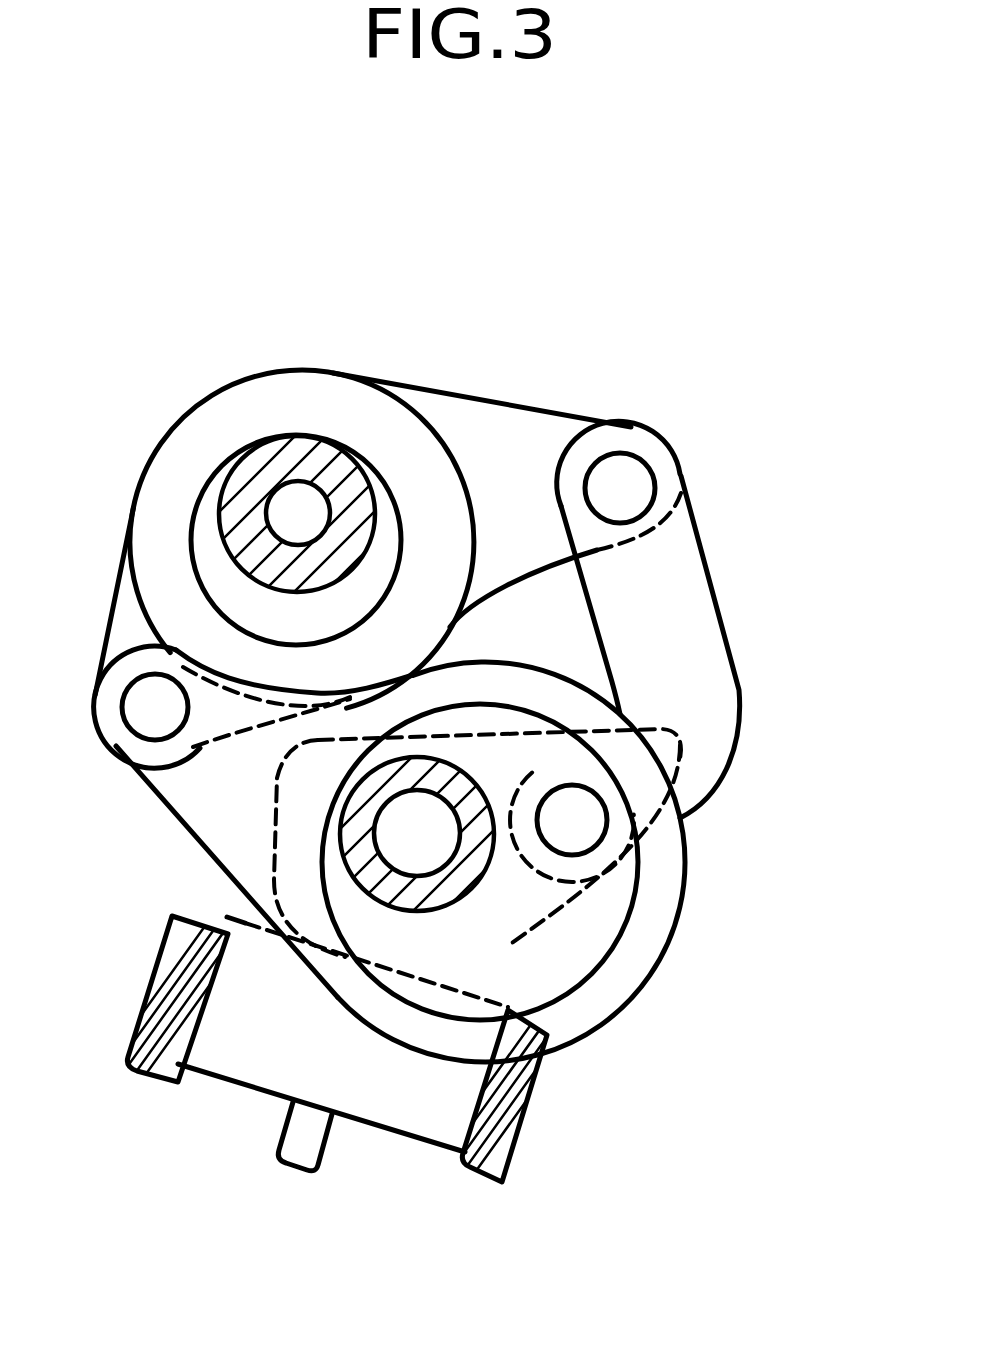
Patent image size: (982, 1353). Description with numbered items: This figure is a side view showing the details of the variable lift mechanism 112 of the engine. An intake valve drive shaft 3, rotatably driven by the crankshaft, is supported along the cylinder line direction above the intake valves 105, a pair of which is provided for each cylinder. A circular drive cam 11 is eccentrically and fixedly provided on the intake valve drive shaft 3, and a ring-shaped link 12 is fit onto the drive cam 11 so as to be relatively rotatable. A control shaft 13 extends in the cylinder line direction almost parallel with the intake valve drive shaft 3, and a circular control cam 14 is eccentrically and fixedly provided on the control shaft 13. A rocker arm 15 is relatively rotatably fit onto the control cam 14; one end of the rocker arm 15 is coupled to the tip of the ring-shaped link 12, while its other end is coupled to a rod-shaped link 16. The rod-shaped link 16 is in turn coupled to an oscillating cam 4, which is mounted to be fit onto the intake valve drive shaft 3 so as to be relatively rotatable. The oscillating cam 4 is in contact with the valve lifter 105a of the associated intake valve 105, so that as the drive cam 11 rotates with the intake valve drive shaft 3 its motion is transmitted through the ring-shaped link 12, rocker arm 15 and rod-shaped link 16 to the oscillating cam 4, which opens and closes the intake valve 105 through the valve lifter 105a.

The variable lift mechanism 112 is at (625, 334).
The ring-shaped link 12 is at (153, 800).
The rocker arm 15 is at (480, 397).
The control cam 14 is at (210, 543).
The control shaft 13 is at (280, 457).
The rod-shaped link 16 is at (693, 628).
The drive cam 11 is at (606, 960).
The intake valve drive shaft 3 is at (467, 870).
The oscillating cam 4 is at (506, 939).
The intake valve 105 is at (322, 1160).
The valve lifter 105a is at (430, 1105).